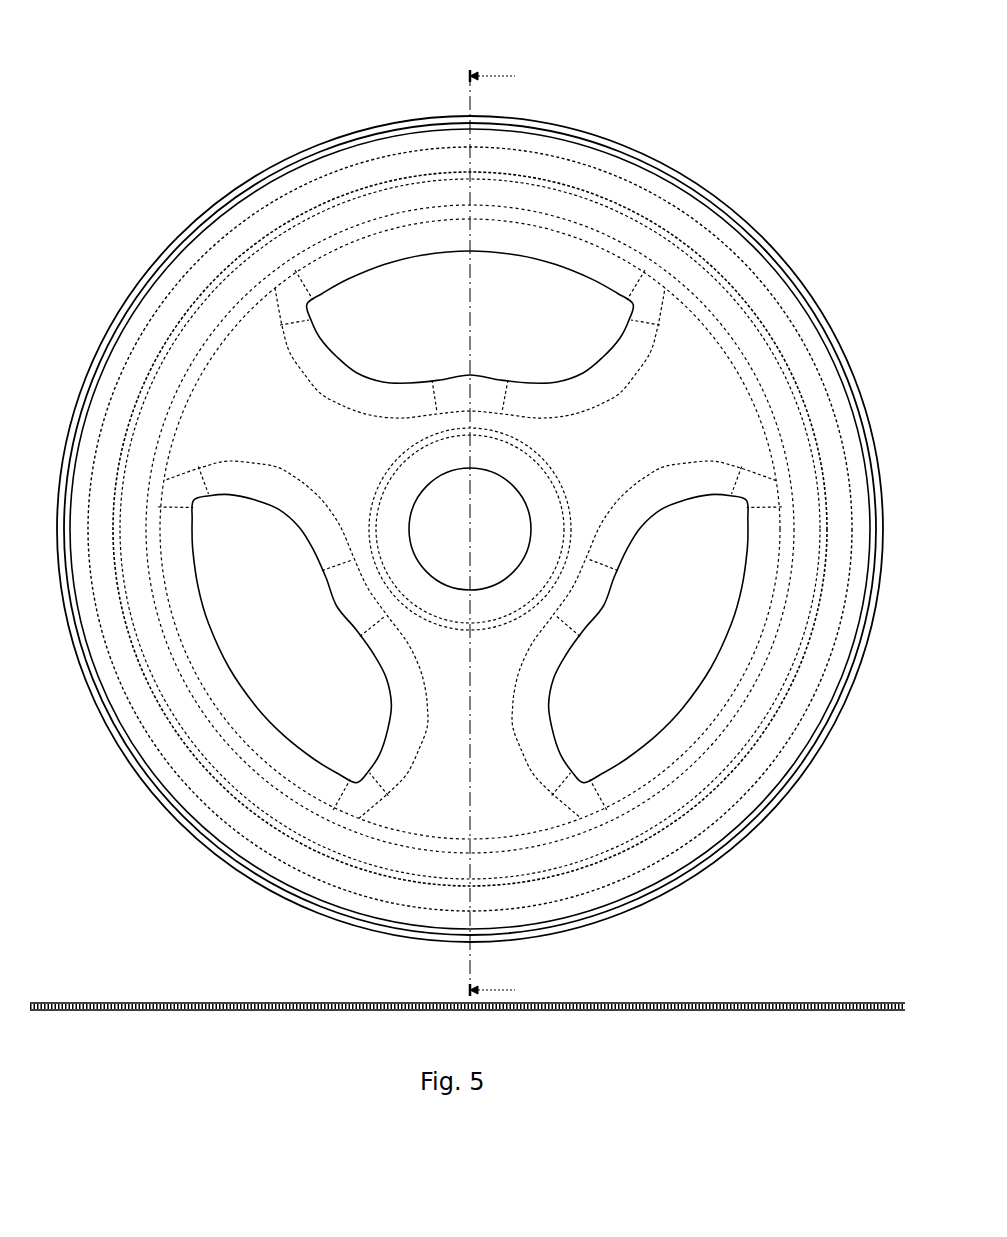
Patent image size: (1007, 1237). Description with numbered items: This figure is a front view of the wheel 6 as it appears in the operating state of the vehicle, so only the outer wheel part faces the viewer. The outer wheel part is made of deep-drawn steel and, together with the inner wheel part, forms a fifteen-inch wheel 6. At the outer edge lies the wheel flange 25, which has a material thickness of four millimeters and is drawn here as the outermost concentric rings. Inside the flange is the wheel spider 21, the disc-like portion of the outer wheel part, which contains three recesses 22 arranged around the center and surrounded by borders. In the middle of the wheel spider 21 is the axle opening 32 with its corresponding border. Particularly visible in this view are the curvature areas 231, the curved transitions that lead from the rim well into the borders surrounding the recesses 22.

The wheel 6 is at (273, 133).
The wheel spider 21 is at (238, 393).
The recesses 22 is at (228, 530).
The curvature areas 231 is at (235, 708).
The wheel flange 25 is at (750, 830).
The axle opening 32 is at (442, 538).